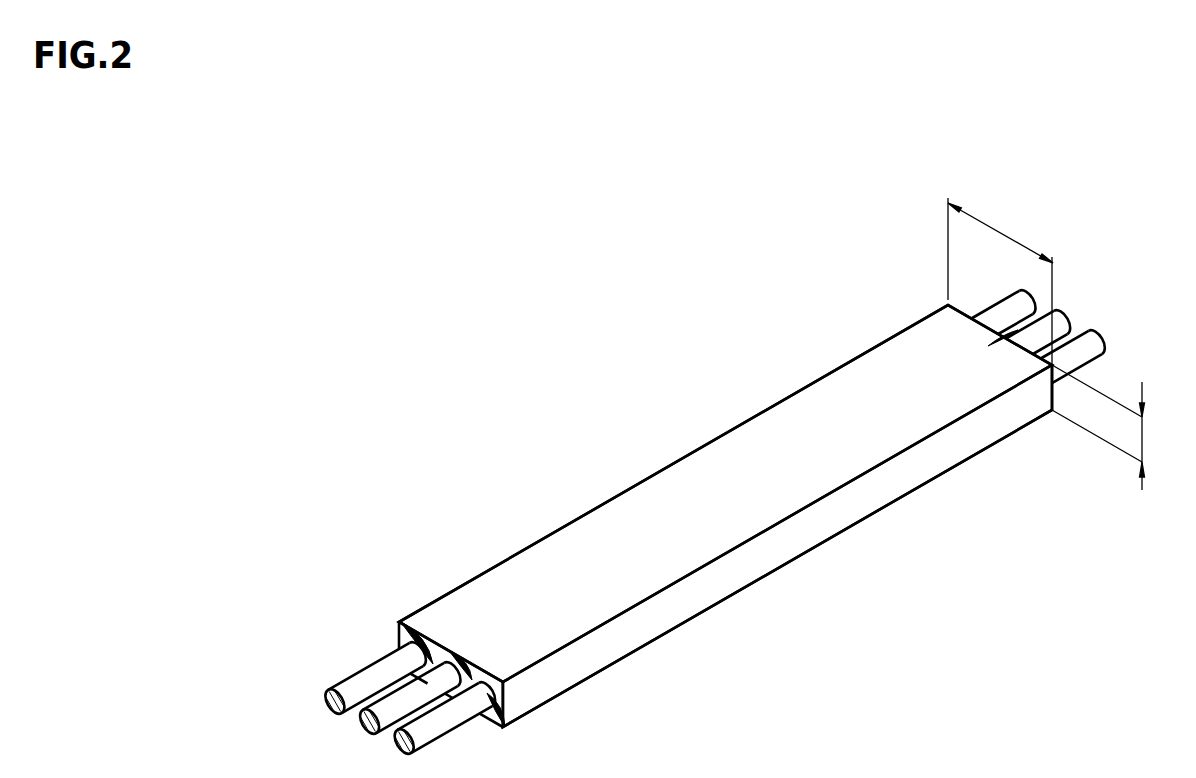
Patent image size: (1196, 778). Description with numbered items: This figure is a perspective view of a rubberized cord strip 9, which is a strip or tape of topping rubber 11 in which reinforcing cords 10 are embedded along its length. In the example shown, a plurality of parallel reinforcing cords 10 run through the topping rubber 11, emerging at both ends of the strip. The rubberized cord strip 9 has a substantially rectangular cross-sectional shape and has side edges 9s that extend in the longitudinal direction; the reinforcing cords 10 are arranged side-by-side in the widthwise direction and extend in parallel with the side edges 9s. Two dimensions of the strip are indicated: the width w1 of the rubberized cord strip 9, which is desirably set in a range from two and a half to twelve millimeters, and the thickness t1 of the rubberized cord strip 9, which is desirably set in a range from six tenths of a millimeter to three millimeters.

The rubberized cord strip 9 is at (747, 468).
The side edges 9s is at (617, 493).
The reinforcing cord 10 is at (357, 687).
The topping rubber 11 is at (398, 628).
The width of the rubberized cord strip w1 is at (1000, 280).
The thickness of the rubberized cord strip t1 is at (1116, 427).